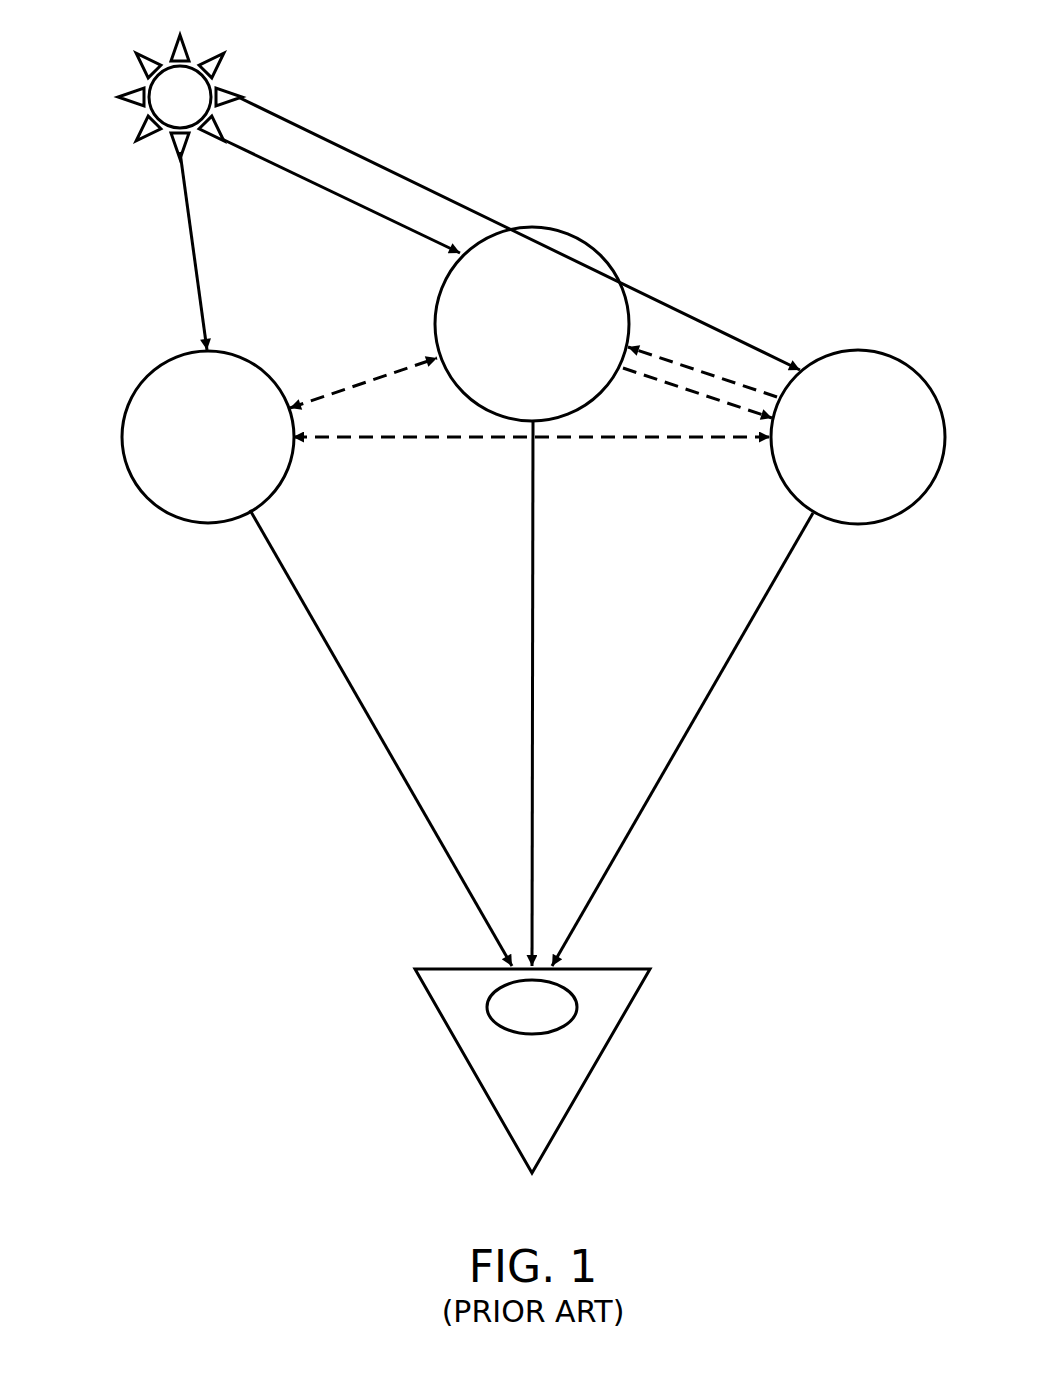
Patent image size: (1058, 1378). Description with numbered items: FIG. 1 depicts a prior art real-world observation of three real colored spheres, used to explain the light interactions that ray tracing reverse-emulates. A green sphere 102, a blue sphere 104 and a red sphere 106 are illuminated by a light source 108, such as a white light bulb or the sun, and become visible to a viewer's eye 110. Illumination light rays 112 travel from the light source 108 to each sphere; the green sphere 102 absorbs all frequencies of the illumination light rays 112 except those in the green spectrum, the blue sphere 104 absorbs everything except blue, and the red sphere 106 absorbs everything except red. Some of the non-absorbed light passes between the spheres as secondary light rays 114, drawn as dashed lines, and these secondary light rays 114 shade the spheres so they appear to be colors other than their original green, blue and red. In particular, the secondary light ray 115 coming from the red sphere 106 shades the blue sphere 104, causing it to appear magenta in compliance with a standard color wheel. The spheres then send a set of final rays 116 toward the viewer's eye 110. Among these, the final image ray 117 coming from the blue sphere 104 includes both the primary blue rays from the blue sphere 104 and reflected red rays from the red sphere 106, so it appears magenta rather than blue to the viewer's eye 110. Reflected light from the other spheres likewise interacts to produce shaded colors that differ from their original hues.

The green sphere 102 is at (147, 378).
The blue sphere 104 is at (600, 253).
The red sphere 106 is at (888, 353).
The light source 108 is at (200, 60).
The viewer's eye 110 is at (645, 980).
The illumination light rays 112 is at (173, 230).
The secondary light rays 114 is at (437, 445).
The secondary light ray 115 is at (698, 365).
The final rays 116 is at (313, 655).
The final image ray 117 is at (513, 590).